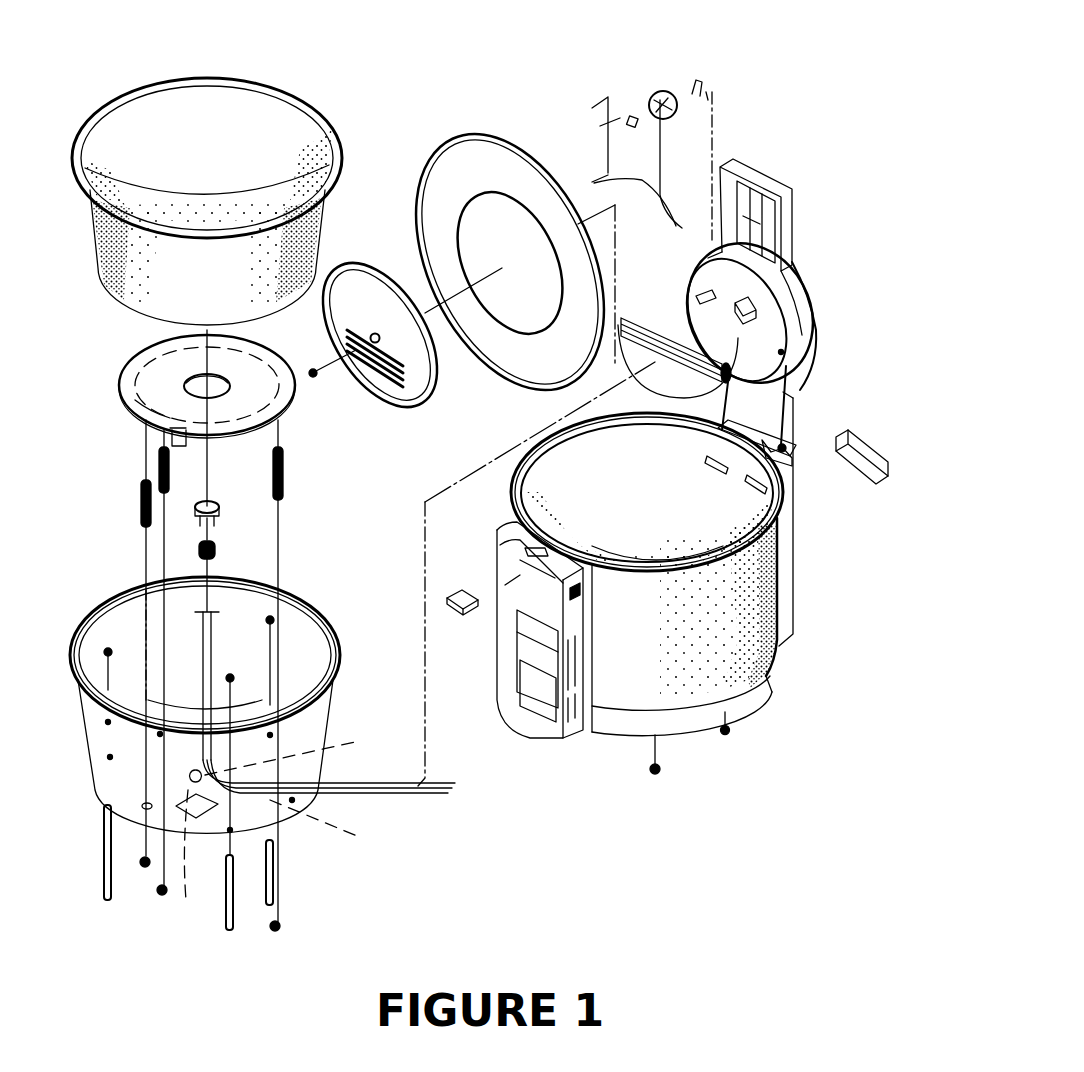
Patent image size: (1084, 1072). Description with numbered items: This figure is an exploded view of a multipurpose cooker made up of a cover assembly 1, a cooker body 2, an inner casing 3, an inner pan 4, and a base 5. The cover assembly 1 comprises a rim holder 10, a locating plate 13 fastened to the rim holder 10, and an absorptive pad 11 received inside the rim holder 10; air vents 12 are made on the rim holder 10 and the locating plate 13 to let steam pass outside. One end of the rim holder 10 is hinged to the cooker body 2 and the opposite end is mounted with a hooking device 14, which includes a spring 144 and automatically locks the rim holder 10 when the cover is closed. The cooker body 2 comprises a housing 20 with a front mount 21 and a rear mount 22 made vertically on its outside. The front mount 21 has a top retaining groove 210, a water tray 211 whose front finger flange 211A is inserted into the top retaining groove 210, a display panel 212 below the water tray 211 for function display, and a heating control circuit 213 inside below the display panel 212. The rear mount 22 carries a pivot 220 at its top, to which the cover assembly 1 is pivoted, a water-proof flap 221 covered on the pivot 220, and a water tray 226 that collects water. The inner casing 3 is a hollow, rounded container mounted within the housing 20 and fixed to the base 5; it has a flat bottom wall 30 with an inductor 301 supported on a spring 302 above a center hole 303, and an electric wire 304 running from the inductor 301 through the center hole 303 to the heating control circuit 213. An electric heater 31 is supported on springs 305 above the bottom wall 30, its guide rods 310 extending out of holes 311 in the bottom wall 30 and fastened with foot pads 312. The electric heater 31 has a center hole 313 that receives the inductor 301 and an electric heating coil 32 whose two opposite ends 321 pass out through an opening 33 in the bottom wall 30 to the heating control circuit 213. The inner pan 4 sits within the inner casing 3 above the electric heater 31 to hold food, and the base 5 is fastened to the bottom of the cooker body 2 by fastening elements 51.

The cover assembly 1 is at (795, 240).
The cooker body 2 is at (502, 498).
The inner casing 3 is at (304, 604).
The inner pan 4 is at (288, 112).
The base 5 is at (754, 688).
The rim holder 10 is at (796, 318).
The absorptive pad 11 is at (645, 495).
The air vents 12 is at (383, 383).
The locating plate 13 is at (375, 333).
The hooking device 14 is at (655, 100).
The housing 20 is at (742, 596).
The front mount 21 is at (532, 562).
The rear mount 22 is at (795, 536).
The bottom wall 30 is at (262, 690).
The electric heater 31 is at (288, 405).
The electric heating coil 32 is at (130, 366).
The opening 33 is at (397, 793).
The fastening elements 51 is at (650, 776).
The spring 144 is at (706, 92).
The top retaining groove 210 is at (540, 566).
The water tray 211 is at (452, 596).
The front finger flange 211A is at (448, 604).
The display panel 212 is at (515, 600).
The heating control circuit 213 is at (500, 680).
The pivot 220 is at (778, 449).
The water-proof flap 221 is at (790, 436).
The water tray 226 is at (872, 484).
The inductor 301 is at (219, 511).
The spring 302 is at (216, 551).
The center hole 303 is at (355, 745).
The electric wire 304 is at (440, 794).
The springs 305 is at (285, 478).
The guide rods 310 is at (283, 436).
The holes 311 is at (339, 828).
The foot pads 312 is at (282, 927).
The center hole 313 is at (196, 388).
The opposite ends 321 is at (180, 442).